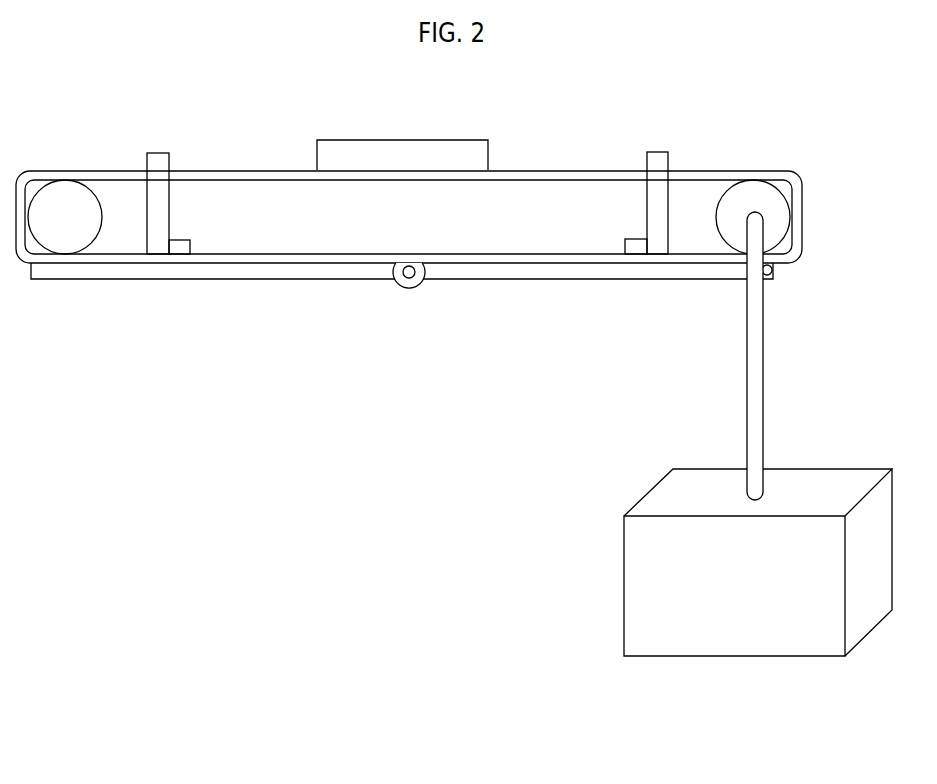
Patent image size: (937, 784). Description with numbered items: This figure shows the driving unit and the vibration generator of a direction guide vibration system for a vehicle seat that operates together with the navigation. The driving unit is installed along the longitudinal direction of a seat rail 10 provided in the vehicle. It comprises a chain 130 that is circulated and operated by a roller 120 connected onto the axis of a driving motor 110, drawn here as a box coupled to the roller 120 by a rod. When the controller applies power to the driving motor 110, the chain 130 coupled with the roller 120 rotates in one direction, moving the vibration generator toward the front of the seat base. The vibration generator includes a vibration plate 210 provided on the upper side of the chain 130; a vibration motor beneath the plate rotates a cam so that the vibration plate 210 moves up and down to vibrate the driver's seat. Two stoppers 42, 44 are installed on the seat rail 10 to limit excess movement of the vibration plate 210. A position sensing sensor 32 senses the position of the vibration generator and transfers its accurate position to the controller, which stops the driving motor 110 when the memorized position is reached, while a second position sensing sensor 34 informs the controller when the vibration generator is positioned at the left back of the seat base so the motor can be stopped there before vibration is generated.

The seat rail 10 is at (51, 274).
The position sensing sensor 32 is at (636, 248).
The position sensing sensor 34 is at (176, 250).
The stopper 42 is at (658, 150).
The stopper 44 is at (157, 150).
The driving motor 110 is at (732, 658).
The roller 120 is at (780, 215).
The chain 130 is at (722, 172).
The vibration plate 210 is at (403, 139).